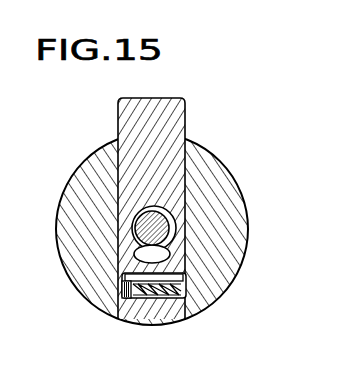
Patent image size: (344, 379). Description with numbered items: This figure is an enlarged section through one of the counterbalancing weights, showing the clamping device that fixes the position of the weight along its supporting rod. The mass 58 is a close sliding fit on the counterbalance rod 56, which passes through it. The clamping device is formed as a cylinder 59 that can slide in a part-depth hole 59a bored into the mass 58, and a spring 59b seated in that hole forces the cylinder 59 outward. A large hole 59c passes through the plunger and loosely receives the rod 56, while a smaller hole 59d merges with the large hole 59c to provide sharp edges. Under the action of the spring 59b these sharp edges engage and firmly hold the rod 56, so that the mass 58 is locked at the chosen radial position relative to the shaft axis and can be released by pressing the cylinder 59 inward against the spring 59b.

The weight 58 is at (219, 189).
The clamping device 59 is at (170, 118).
The large hole 59c is at (129, 208).
The smaller hole 59d is at (136, 257).
The counterbalance rod 56 is at (135, 232).
The part-depth hole 59a is at (123, 293).
The spring 59b is at (162, 298).